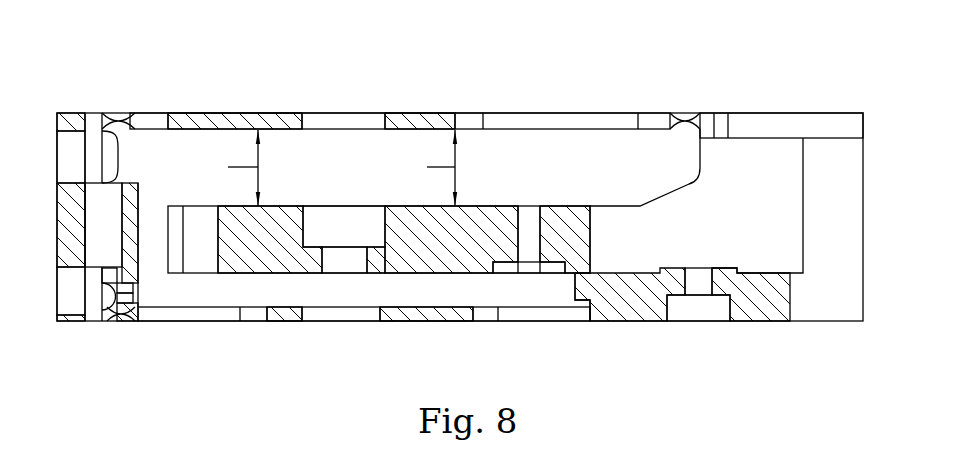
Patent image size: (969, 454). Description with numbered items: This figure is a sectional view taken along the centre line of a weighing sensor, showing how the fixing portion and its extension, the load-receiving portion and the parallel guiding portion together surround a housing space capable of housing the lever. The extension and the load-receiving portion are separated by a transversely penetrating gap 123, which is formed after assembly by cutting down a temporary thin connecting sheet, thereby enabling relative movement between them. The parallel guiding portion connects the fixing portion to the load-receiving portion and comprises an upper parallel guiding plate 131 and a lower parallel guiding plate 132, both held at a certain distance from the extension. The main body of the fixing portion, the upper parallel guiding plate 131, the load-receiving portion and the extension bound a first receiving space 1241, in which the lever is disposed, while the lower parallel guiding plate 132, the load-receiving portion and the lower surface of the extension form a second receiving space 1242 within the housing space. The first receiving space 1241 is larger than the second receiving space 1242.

The transversely penetrating gap 123 is at (157, 203).
The upper parallel guiding plate 131 is at (327, 113).
The lower parallel guiding plate 132 is at (338, 321).
The first receiving space 1241 is at (477, 160).
The second receiving space 1242 is at (522, 290).